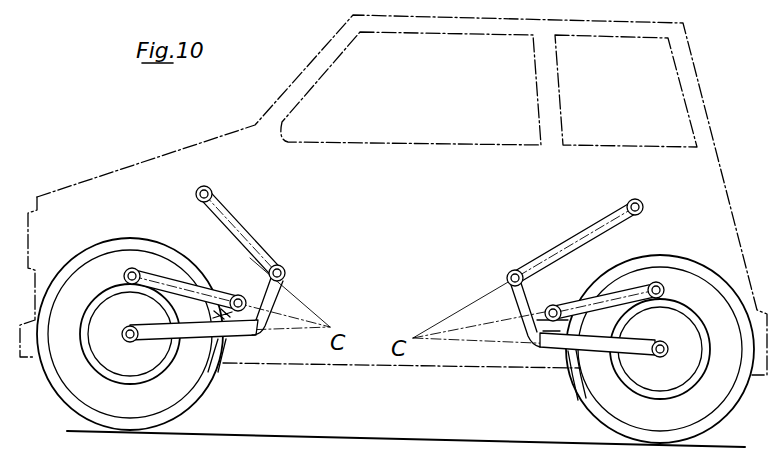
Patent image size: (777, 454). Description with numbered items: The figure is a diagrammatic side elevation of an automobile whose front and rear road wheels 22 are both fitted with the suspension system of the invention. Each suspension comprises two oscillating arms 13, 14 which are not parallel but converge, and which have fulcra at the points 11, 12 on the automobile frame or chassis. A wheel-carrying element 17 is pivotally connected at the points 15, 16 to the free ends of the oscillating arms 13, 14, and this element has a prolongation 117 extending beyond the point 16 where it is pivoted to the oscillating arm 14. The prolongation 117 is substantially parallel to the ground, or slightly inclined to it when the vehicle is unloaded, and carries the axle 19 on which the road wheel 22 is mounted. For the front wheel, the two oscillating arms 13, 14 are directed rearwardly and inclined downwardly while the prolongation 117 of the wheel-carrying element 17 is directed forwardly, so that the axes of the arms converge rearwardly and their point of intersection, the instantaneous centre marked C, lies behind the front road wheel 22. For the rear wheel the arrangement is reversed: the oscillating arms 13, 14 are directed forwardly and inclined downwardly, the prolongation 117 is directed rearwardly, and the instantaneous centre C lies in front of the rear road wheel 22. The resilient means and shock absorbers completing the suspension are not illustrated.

The fulcrum point 11 is at (210, 191).
The fulcrum point 12 is at (132, 268).
The oscillating arm 13 is at (240, 226).
The oscillating arm 14 is at (156, 276).
The pivotal connection 15 is at (285, 266).
The pivotal connection 16 is at (240, 295).
The wheel-carrying element 17 is at (285, 295).
The axle 19 is at (135, 342).
The road wheel 22 is at (80, 262).
The prolongation 117 is at (214, 373).